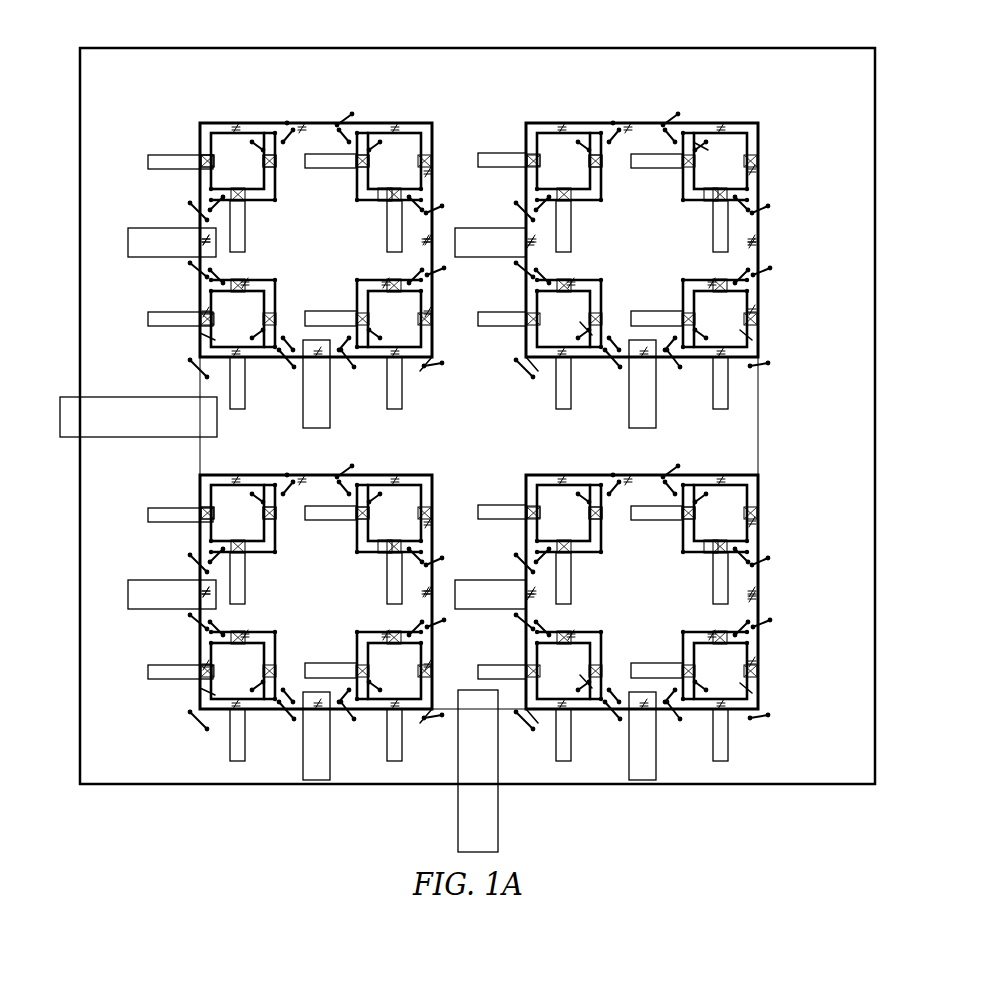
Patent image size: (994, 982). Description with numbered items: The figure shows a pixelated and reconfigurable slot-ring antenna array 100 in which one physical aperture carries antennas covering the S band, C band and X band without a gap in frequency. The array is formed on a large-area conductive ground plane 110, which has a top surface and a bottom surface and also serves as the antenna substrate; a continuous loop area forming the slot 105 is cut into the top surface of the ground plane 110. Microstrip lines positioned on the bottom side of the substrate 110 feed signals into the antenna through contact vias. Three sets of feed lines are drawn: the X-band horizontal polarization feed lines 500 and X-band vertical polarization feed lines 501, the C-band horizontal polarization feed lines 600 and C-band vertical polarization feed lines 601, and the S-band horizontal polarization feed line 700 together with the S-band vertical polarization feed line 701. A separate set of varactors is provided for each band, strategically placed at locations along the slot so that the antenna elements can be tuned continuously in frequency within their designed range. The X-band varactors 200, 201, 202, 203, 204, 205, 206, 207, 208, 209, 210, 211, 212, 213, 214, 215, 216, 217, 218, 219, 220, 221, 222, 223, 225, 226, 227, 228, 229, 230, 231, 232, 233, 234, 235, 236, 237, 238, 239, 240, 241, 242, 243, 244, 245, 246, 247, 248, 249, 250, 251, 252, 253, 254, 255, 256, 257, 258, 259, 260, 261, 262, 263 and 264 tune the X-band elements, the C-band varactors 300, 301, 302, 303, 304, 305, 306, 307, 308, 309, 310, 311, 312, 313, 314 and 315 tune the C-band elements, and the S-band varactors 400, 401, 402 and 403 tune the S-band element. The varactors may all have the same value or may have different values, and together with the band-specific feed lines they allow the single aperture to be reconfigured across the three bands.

The pixelated and reconfigurable slot-ring antenna array 100 is at (218, 28).
The slot 105 is at (210, 122).
The conductive ground plane 110 is at (358, 47).
The X-band varactor 200 is at (240, 127).
The X-band varactor 201 is at (268, 168).
The X-band varactor 202 is at (250, 201).
The X-band varactor 203 is at (203, 156).
The X-band varactor 204 is at (388, 127).
The X-band varactor 205 is at (432, 172).
The X-band varactor 206 is at (380, 201).
The X-band varactor 207 is at (355, 148).
The X-band varactor 208 is at (384, 278).
The X-band varactor 209 is at (432, 330).
The X-band varactor 210 is at (425, 362).
The X-band varactor 211 is at (364, 312).
The X-band varactor 212 is at (565, 127).
The X-band varactor 213 is at (596, 168).
The X-band varactor 214 is at (580, 201).
The X-band varactor 215 is at (527, 170).
The X-band varactor 216 is at (720, 127).
The X-band varactor 217 is at (759, 172).
The X-band varactor 218 is at (705, 201).
The X-band varactor 219 is at (698, 143).
The X-band varactor 220 is at (712, 278).
The X-band varactor 221 is at (760, 306).
The X-band varactor 222 is at (752, 330).
The X-band varactor 223 is at (699, 311).
The X-band varactor 225 is at (570, 280).
The X-band varactor 226 is at (588, 330).
The X-band varactor 227 is at (538, 362).
The X-band varactor 228 is at (541, 301).
The X-band varactor 229 is at (565, 480).
The X-band varactor 230 is at (596, 520).
The X-band varactor 231 is at (580, 553).
The X-band varactor 232 is at (527, 522).
The X-band varactor 233 is at (720, 480).
The X-band varactor 234 is at (759, 526).
The X-band varactor 235 is at (705, 553).
The X-band varactor 236 is at (684, 503).
The X-band varactor 237 is at (712, 630).
The X-band varactor 238 is at (760, 659).
The X-band varactor 239 is at (752, 683).
The X-band varactor 240 is at (699, 665).
The X-band varactor 241 is at (570, 632).
The X-band varactor 242 is at (588, 683).
The X-band varactor 243 is at (548, 716).
The X-band varactor 244 is at (541, 656).
The X-band varactor 245 is at (240, 480).
The X-band varactor 246 is at (268, 520).
The X-band varactor 247 is at (250, 553).
The X-band varactor 248 is at (203, 508).
The X-band varactor 249 is at (390, 480).
The X-band varactor 250 is at (432, 523).
The X-band varactor 251 is at (380, 553).
The X-band varactor 252 is at (355, 500).
The X-band varactor 253 is at (384, 630).
The X-band varactor 254 is at (432, 683).
The X-band varactor 255 is at (408, 718).
The X-band varactor 256 is at (365, 664).
The X-band varactor 257 is at (242, 632).
The X-band varactor 258 is at (264, 659).
The X-band varactor 259 is at (205, 690).
The X-band varactor 260 is at (205, 665).
The X-band varactor 261 is at (242, 280).
The X-band varactor 262 is at (264, 304).
The X-band varactor 263 is at (205, 335).
The X-band varactor 264 is at (205, 308).
The C-band varactor 300 is at (301, 125).
The C-band varactor 301 is at (629, 125).
The C-band varactor 302 is at (760, 243).
The C-band varactor 303 is at (632, 364).
The C-band varactor 304 is at (527, 258).
The C-band varactor 305 is at (434, 220).
The C-band varactor 306 is at (300, 364).
The C-band varactor 307 is at (200, 216).
The C-band varactor 308 is at (629, 477).
The C-band varactor 309 is at (760, 597).
The C-band varactor 310 is at (632, 716).
The C-band varactor 311 is at (527, 610).
The C-band varactor 312 is at (302, 477).
The C-band varactor 313 is at (434, 574).
The C-band varactor 314 is at (330, 716).
The C-band varactor 315 is at (200, 574).
The S-band varactor 400 is at (478, 122).
The S-band varactor 401 is at (759, 424).
The S-band varactor 402 is at (478, 712).
The S-band varactor 403 is at (200, 448).
The X-band horizontal polarization feed lines 500 is at (175, 169).
The X-band vertical polarization feed lines 501 is at (246, 226).
The C-band horizontal polarization feed lines 600 is at (185, 251).
The C-band vertical polarization feed lines 601 is at (330, 416).
The S-band horizontal polarization feed line 700 is at (153, 425).
The S-band vertical polarization feed line 701 is at (491, 813).